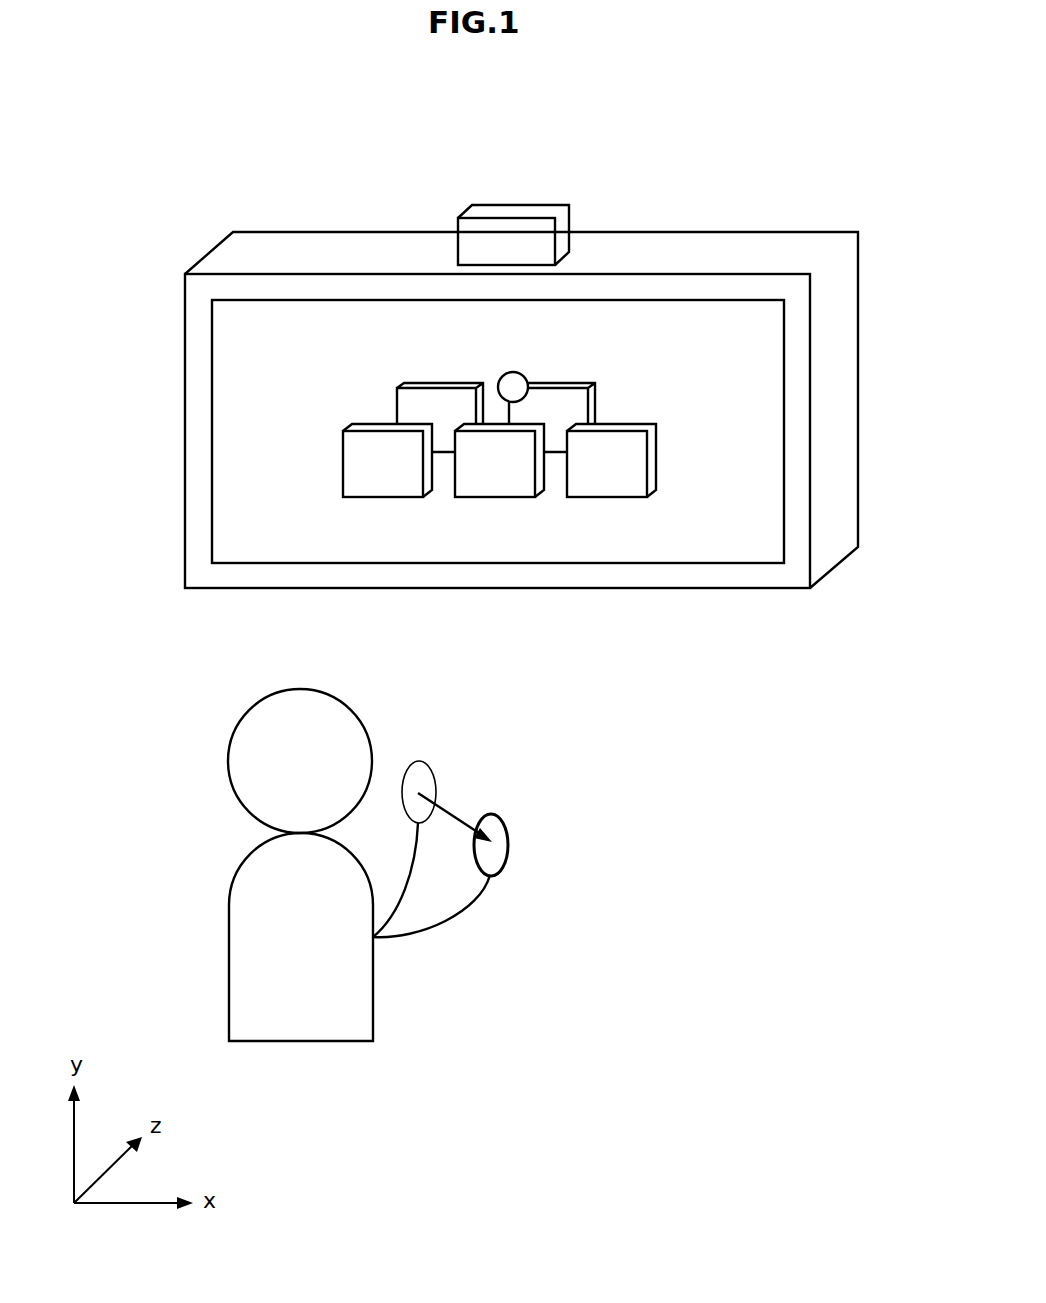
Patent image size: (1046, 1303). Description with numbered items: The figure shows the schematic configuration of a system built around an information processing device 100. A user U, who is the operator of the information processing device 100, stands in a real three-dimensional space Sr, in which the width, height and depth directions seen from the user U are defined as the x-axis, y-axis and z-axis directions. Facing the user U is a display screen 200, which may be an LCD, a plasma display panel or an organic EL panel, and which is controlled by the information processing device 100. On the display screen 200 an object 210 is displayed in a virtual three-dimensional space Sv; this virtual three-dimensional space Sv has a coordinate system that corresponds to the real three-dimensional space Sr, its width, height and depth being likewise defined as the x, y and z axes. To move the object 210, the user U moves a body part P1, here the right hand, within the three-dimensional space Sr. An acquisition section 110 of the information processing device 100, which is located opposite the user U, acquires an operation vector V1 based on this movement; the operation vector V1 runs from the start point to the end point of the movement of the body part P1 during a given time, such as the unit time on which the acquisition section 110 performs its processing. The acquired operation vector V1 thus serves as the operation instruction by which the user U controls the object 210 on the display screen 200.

The information processing device 100 is at (709, 165).
The acquisition section 110 is at (522, 205).
The display screen 200 is at (688, 563).
The object 210 is at (368, 405).
The virtual three-dimensional space Sv is at (578, 530).
The user U is at (182, 762).
The body part P1 is at (420, 760).
The operation vector V1 is at (449, 826).
The three-dimensional space Sr is at (652, 943).